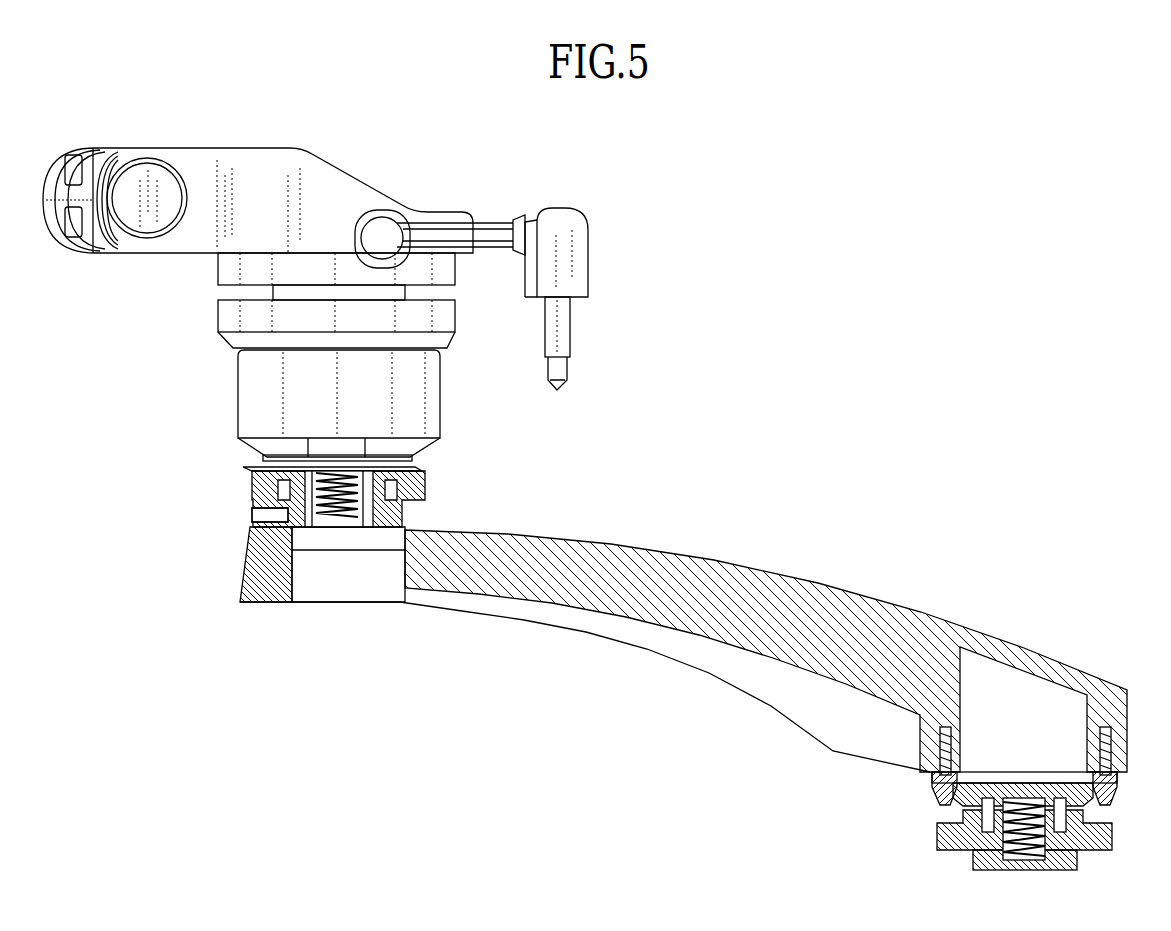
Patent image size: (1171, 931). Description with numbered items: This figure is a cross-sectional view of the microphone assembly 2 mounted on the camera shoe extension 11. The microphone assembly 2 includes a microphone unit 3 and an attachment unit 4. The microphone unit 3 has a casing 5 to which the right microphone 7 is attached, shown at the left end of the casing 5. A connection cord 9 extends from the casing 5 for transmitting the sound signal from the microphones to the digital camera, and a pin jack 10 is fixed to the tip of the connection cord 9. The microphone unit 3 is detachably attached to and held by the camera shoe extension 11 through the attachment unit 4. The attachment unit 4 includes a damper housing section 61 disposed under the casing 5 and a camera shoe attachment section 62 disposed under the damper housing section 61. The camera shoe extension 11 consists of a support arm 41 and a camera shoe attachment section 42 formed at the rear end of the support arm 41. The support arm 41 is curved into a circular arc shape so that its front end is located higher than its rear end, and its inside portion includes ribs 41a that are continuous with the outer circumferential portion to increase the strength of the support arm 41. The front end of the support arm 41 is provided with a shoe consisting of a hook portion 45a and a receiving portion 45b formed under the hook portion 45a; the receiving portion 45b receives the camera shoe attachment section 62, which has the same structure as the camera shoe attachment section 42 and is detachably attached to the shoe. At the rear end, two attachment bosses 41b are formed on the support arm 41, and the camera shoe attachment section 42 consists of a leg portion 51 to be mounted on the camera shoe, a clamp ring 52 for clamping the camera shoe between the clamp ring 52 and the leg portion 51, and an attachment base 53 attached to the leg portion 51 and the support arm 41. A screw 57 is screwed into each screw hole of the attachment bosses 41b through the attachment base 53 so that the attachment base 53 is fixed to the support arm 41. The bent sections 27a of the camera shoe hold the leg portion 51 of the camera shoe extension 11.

The microphone assembly 2 is at (432, 197).
The microphone unit 3 is at (153, 156).
The attachment unit 4 is at (276, 405).
The casing 5 is at (319, 178).
The right microphone 7 is at (93, 259).
The connection cord 9 is at (484, 229).
The pin jack 10 is at (557, 391).
The camera shoe extension 11 is at (683, 601).
The support arm 41 is at (850, 608).
The ribs 41a is at (732, 620).
The attachment bosses 41b is at (938, 745).
The camera shoe attachment section 42 is at (959, 805).
The hook portion 45a is at (272, 508).
The receiving portion 45b is at (340, 560).
The leg portion 51 is at (1077, 859).
The clamp ring 52 is at (957, 838).
The attachment base 53 is at (947, 801).
The screw 57 is at (953, 746).
The damper housing section 61 is at (250, 382).
The camera shoe attachment section 62 is at (433, 491).
The bent sections 27a is at (970, 852).